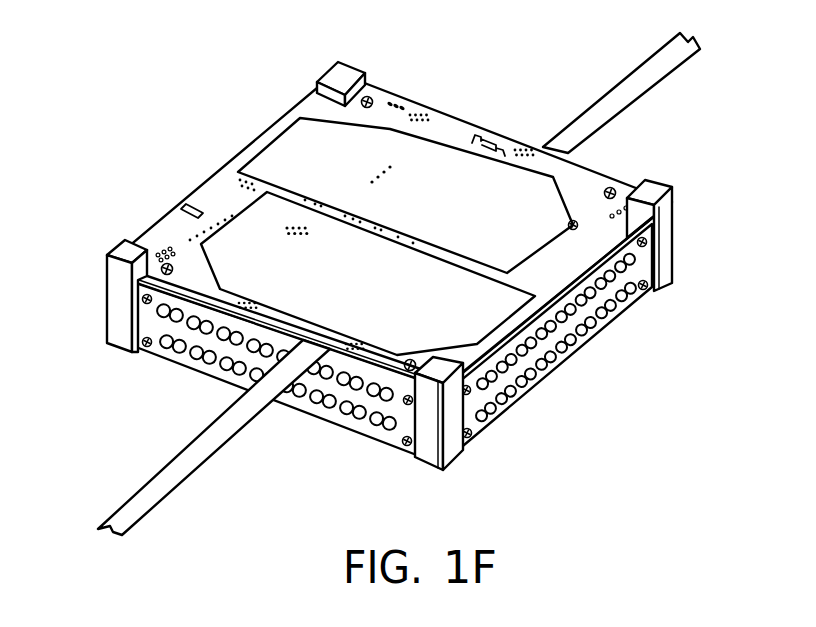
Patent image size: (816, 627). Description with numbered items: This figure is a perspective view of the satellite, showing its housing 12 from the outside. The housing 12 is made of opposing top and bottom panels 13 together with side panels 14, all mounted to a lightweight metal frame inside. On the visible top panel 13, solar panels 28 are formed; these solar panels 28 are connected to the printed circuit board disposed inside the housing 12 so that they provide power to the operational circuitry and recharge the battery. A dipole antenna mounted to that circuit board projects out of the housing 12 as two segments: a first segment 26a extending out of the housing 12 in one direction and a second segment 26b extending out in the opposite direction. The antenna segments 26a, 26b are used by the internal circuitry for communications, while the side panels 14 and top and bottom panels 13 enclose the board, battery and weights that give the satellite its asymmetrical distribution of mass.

The housing 12 is at (703, 240).
The top and bottom panels 13 is at (587, 183).
The side panels 14 is at (598, 322).
The first segment 26a is at (652, 64).
The second segment 26b is at (176, 474).
The solar panels 28 is at (295, 150).